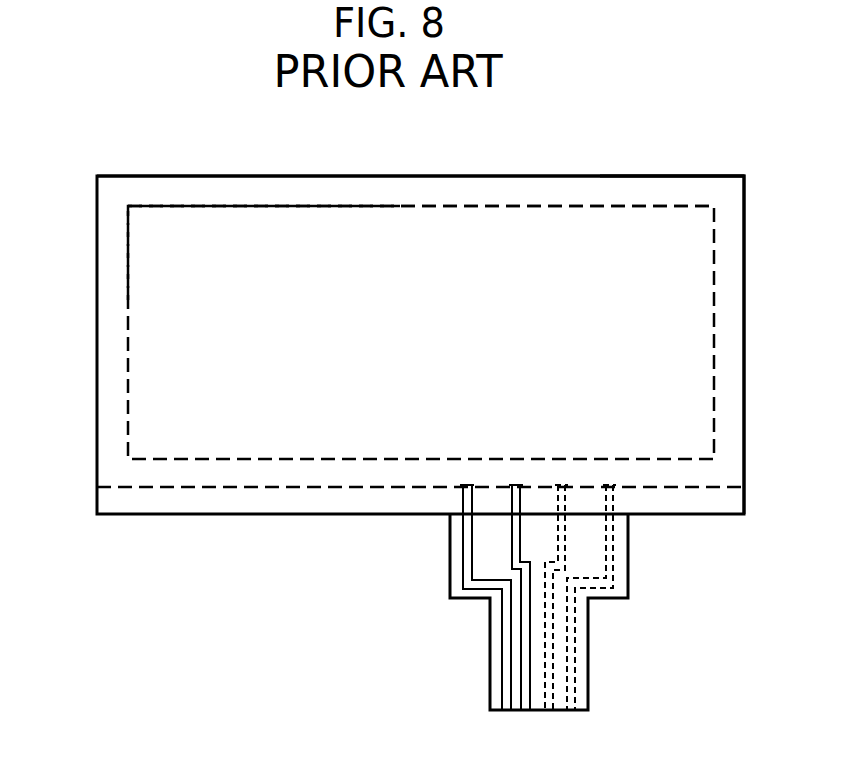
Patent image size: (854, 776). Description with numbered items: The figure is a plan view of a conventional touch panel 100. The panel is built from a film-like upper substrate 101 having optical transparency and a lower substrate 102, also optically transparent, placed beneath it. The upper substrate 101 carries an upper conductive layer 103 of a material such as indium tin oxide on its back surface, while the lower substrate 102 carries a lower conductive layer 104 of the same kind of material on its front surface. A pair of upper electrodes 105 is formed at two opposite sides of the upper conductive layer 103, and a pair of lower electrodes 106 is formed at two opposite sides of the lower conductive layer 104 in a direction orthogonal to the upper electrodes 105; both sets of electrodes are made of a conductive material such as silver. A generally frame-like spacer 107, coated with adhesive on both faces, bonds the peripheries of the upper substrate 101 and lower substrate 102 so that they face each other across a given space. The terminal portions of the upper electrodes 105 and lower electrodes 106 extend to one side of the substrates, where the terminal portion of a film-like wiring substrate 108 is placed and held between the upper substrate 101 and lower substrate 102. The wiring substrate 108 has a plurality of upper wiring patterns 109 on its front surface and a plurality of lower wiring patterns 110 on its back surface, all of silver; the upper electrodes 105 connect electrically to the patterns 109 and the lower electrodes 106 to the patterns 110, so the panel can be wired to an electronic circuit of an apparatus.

The touch panel 100 is at (231, 528).
The upper substrate 101 is at (563, 176).
The lower substrate 102 is at (658, 176).
The upper conductive layer 103 is at (158, 228).
The lower conductive layer 104 is at (275, 228).
The upper electrodes 105 is at (512, 492).
The lower electrodes 106 is at (563, 492).
The spacer 107 is at (447, 197).
The wiring substrate 108 is at (462, 597).
The upper wiring patterns 109 is at (527, 678).
The lower wiring patterns 110 is at (553, 663).